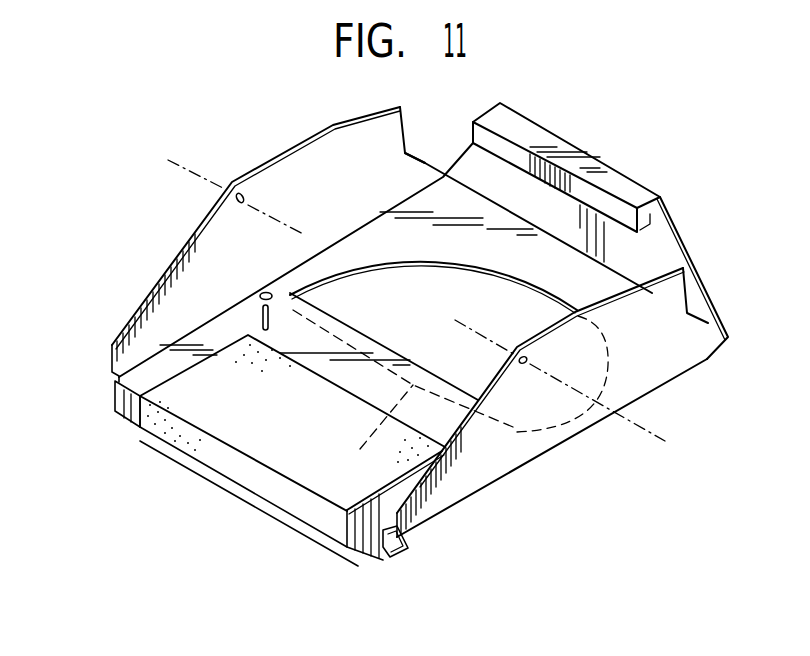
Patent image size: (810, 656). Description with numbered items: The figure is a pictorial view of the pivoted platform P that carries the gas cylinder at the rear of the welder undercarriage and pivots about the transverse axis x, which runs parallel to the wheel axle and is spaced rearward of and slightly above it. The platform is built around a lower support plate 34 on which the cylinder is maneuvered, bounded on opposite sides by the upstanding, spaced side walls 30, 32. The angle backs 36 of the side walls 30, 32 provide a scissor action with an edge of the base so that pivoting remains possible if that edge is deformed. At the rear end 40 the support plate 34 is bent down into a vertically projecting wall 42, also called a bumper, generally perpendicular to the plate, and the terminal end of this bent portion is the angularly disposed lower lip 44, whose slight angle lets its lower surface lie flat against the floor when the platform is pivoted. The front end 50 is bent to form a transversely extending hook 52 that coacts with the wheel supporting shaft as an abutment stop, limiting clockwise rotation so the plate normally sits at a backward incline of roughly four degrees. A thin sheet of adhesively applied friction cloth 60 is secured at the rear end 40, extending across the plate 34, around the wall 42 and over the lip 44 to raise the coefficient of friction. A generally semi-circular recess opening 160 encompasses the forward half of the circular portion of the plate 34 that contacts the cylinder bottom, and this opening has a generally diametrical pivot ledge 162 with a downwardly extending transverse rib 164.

The side wall 30 is at (503, 457).
The side wall 32 is at (275, 157).
The lower support plate 34 is at (450, 437).
The angle backs 36 is at (423, 162).
The rear end 40 is at (133, 391).
The downward projecting wall 42 is at (370, 548).
The lower lip 44 is at (397, 550).
The front end 50 is at (708, 360).
The hook 52 is at (623, 178).
The friction cloth 60 is at (290, 482).
The recess opening 160 is at (560, 340).
The pivot ledge 162 is at (390, 350).
The transverse rib 164 is at (366, 430).
The pivoted platform P is at (128, 423).
The transverse axis x is at (647, 433).